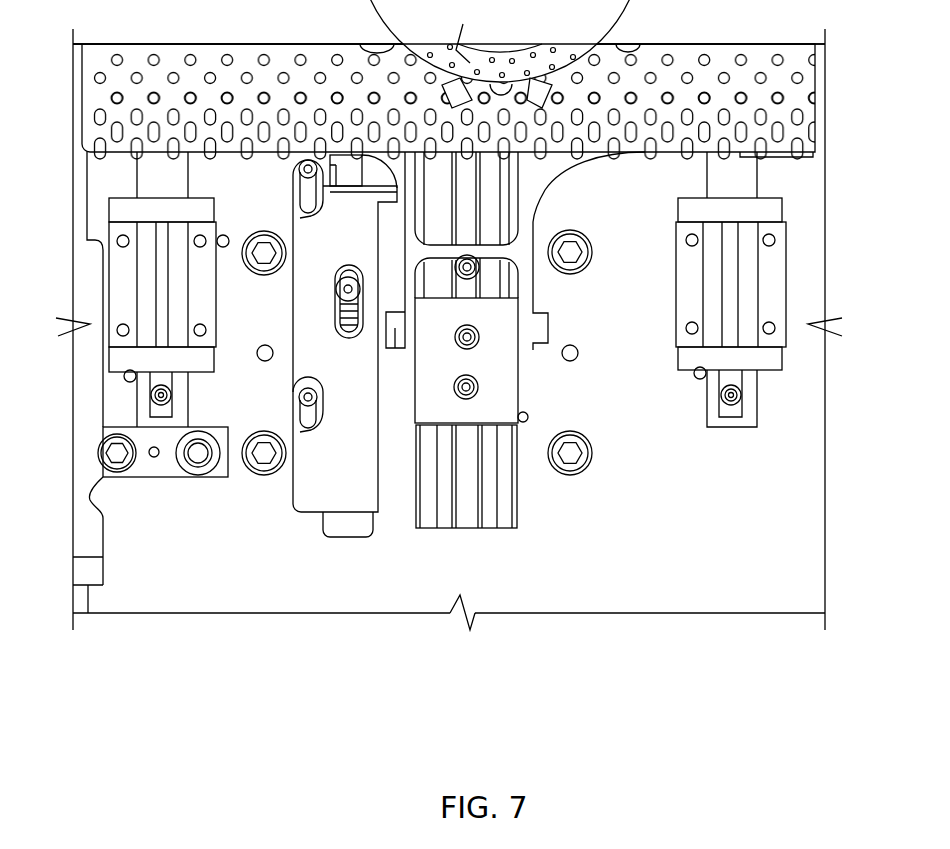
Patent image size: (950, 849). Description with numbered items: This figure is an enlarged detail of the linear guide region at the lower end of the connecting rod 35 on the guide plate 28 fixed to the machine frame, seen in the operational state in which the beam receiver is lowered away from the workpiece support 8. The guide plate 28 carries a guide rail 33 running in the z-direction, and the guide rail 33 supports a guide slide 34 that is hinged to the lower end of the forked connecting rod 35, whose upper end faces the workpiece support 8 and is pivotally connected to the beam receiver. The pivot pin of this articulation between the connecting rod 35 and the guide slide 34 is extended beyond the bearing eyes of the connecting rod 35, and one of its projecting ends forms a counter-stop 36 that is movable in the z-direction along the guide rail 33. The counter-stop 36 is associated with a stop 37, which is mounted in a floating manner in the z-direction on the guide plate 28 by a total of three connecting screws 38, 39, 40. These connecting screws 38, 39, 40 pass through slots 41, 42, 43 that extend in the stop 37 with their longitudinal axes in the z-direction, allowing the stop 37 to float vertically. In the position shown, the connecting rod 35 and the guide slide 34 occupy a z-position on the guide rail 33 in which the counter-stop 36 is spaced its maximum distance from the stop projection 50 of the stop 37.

The workpiece support 8 is at (790, 163).
The second guide plate 28 is at (632, 246).
The guide rail 33 is at (465, 500).
The guide slide 34 is at (500, 412).
The connecting rod 35 is at (520, 283).
The counter-stop 36 is at (393, 350).
The stop 37 is at (300, 515).
The connecting screw 38 is at (300, 397).
The connecting screw 39 is at (340, 289).
The connecting screw 40 is at (387, 192).
The slot 41 is at (310, 422).
The slot 42 is at (340, 312).
The slot 43 is at (300, 205).
The stop projection 50 is at (323, 190).